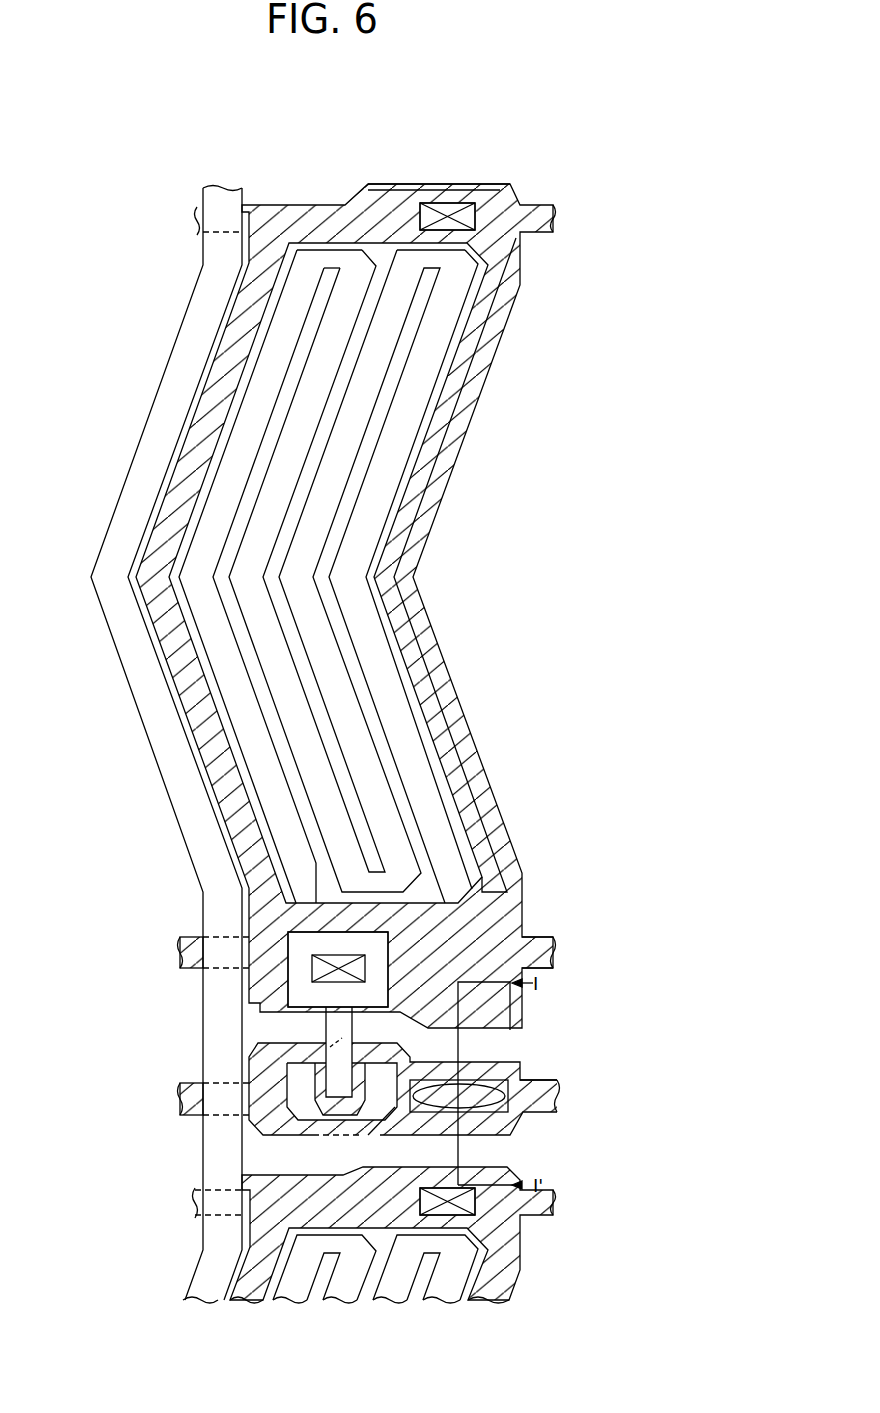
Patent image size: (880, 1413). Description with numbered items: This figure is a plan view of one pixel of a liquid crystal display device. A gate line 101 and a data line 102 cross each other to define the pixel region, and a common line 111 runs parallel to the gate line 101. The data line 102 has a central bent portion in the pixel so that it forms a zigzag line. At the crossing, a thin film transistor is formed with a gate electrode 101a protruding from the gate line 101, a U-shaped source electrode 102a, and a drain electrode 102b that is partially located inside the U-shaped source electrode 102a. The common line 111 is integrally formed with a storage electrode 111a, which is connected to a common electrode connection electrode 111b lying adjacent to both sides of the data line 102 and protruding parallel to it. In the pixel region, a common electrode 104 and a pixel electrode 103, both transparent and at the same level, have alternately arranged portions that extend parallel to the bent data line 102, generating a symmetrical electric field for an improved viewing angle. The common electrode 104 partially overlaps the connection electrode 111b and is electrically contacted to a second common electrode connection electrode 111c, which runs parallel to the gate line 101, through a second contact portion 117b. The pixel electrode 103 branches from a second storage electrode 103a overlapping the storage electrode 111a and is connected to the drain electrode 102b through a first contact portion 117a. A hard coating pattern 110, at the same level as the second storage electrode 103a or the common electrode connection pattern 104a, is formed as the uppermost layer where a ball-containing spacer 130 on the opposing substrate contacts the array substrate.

The gate line 101 is at (195, 1112).
The gate electrode 101a is at (358, 1031).
The data line 102 is at (187, 858).
The source electrode 102a is at (373, 1133).
The drain electrode 102b is at (283, 940).
The pixel electrode 103 is at (280, 418).
The second storage electrode 103a is at (523, 995).
The common electrode 104 is at (393, 648).
The common electrode connection pattern 104a is at (428, 185).
The hard coating pattern 110 is at (520, 1125).
The common line 111 is at (186, 975).
The storage electrode 111a is at (523, 1020).
The common electrode connection electrode 111b is at (510, 842).
The second common electrode connection electrode 111c is at (403, 185).
The first contact portion 117a is at (312, 970).
The second contact portion 117b is at (445, 218).
The spacer 130 is at (505, 1090).